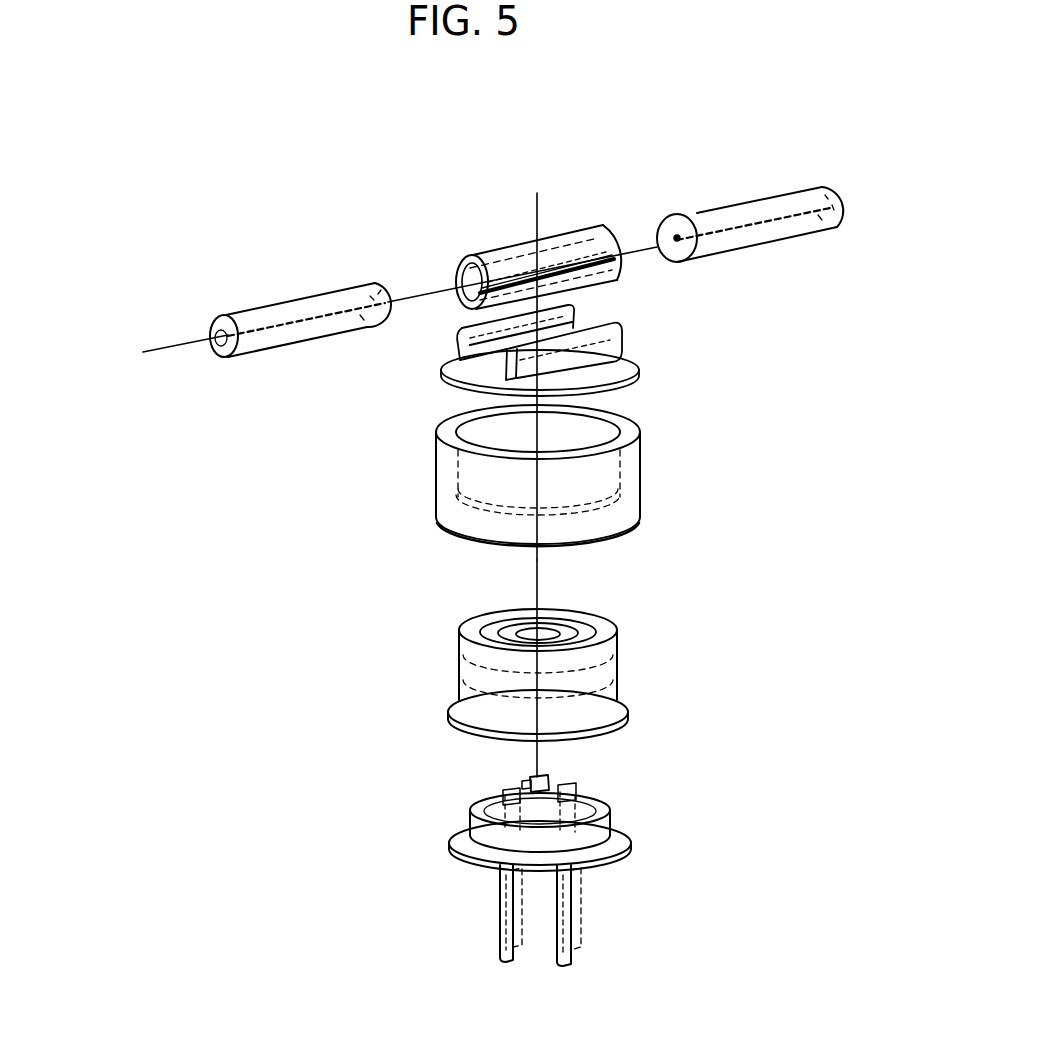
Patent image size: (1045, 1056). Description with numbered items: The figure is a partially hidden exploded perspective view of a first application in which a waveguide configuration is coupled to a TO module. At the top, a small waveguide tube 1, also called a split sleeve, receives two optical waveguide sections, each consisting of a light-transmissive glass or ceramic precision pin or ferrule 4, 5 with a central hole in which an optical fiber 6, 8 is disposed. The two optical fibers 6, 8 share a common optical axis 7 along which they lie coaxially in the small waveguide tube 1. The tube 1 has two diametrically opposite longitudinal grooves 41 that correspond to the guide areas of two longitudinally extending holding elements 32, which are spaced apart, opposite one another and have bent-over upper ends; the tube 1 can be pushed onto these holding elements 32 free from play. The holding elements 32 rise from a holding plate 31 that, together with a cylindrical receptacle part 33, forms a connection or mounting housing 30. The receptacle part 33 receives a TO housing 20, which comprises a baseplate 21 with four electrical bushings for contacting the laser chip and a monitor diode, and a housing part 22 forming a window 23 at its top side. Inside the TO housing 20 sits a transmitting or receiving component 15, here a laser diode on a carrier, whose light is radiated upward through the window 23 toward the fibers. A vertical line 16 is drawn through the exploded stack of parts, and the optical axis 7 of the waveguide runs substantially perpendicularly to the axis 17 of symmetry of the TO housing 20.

The small waveguide tube 1 is at (577, 227).
The precision pin (ferrule) 4 is at (303, 307).
The precision pin (ferrule) 5 is at (772, 203).
The optical waveguide 6 is at (290, 325).
The common axis 7 is at (182, 350).
The optical waveguide 8 is at (792, 215).
The transmitting or receiving component 15 is at (563, 781).
The vertical axis 16 is at (537, 205).
The axis of symmetry 17 is at (540, 578).
The TO housing 20 is at (617, 775).
The baseplate 21 is at (630, 832).
The housing part 22 is at (618, 675).
The window 23 is at (557, 624).
The connection or mounting housing 30 is at (624, 417).
The holding plate 31 is at (633, 358).
The holding elements 32 is at (610, 322).
The cylindrical receptacle part 33 is at (578, 475).
The longitudinal grooves 41 is at (623, 258).